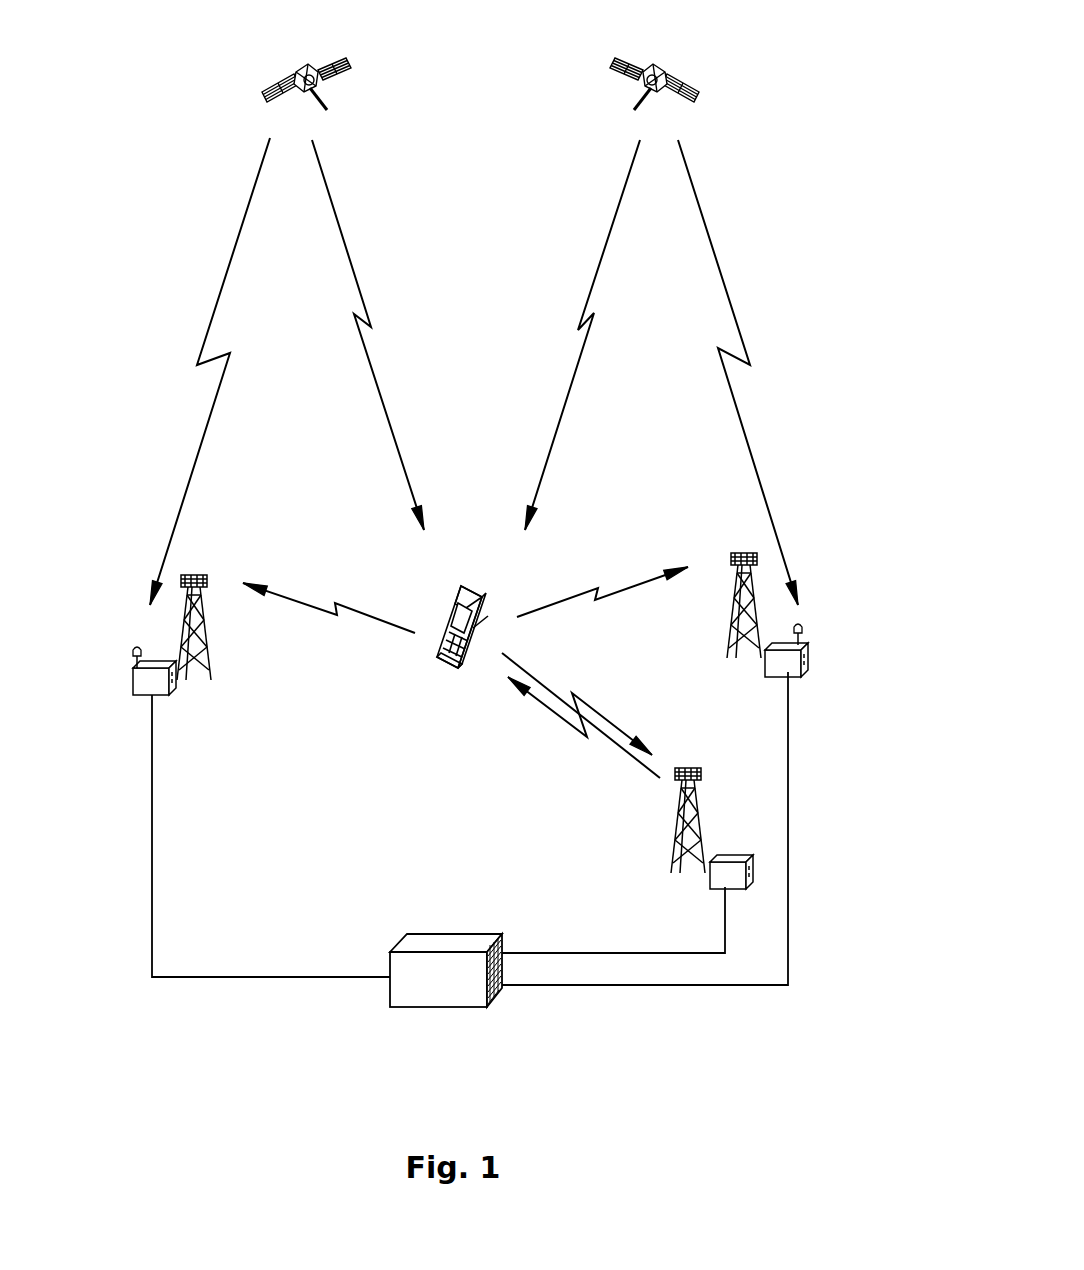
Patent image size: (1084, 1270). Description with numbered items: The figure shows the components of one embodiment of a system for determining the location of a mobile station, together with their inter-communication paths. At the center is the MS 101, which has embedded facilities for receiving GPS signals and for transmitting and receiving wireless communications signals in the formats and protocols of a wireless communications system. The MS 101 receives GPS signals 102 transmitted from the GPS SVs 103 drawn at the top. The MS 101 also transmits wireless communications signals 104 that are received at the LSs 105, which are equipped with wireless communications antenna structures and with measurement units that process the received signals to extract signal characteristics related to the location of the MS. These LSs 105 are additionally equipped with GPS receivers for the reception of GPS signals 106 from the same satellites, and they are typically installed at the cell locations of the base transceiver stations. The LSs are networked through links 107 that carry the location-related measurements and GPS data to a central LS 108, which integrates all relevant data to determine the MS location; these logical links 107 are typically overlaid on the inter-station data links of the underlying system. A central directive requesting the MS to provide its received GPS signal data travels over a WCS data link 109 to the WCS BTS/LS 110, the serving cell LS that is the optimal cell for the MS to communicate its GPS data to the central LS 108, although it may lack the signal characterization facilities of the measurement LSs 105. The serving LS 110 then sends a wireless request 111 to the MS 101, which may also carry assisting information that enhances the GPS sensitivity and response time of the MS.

The MS 101 is at (437, 670).
The GPS signals 102 is at (568, 300).
The GPS SVs 103 is at (572, 92).
The wireless communications signals 104 is at (383, 627).
The LSs 105 is at (135, 697).
The GPS signals 106 is at (200, 305).
The links 107 is at (183, 963).
The central LS 108 is at (462, 928).
The WCS data link 109 is at (625, 940).
The WCS BTS/LS 110 is at (760, 870).
The wireless request 111 is at (560, 727).